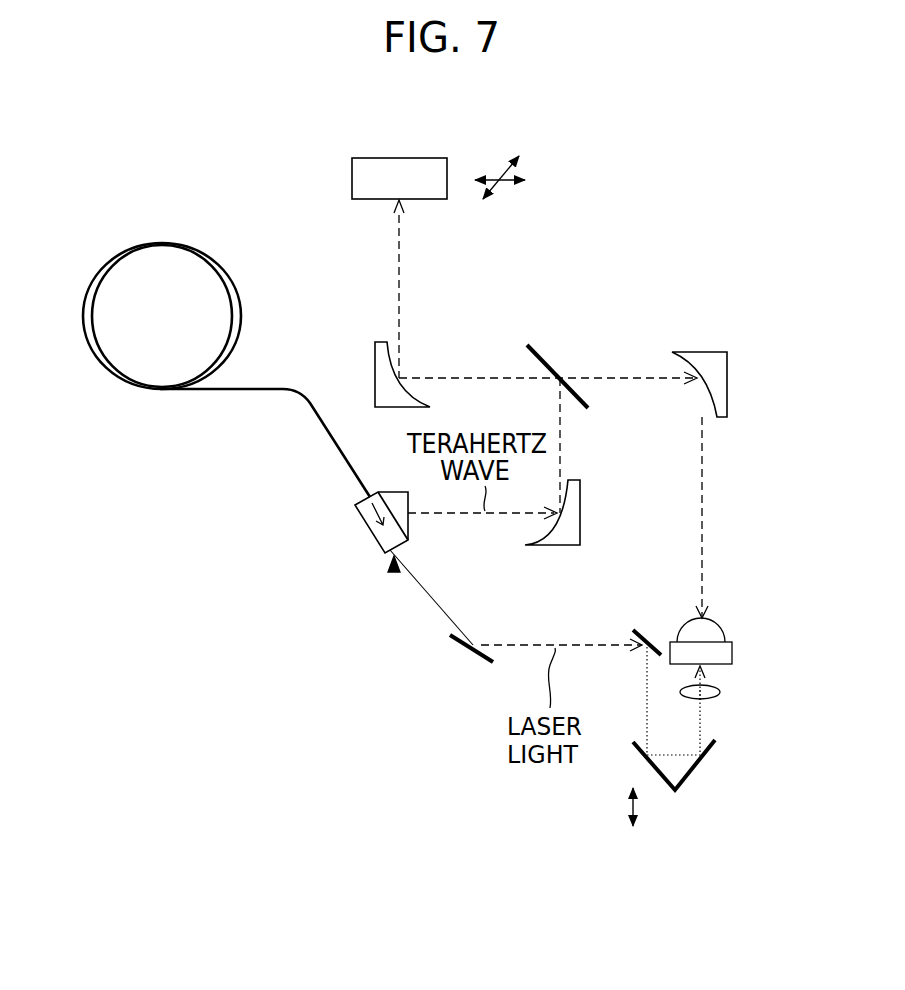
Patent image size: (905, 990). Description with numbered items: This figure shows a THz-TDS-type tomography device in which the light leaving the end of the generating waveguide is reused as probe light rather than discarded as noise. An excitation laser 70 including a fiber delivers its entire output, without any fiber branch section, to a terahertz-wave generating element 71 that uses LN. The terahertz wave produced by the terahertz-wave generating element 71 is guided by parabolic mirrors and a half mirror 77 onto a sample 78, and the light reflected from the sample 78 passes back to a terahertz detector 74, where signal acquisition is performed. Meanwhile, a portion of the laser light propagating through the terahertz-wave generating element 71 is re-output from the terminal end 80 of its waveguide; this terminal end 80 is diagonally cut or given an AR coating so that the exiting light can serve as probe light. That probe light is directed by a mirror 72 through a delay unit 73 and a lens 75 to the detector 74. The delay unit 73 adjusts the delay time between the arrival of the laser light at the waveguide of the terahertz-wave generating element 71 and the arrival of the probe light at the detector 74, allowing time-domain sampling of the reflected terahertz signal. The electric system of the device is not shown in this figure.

The excitation laser 70 is at (143, 242).
The terahertz-wave generating element 71 is at (376, 533).
The mirror 72 is at (477, 660).
The delay unit 73 is at (690, 777).
The terahertz detector 74 is at (725, 652).
The lens 75 is at (720, 691).
The half mirror 77 is at (548, 362).
The sample 78 is at (400, 175).
The terminal end 80 is at (394, 571).